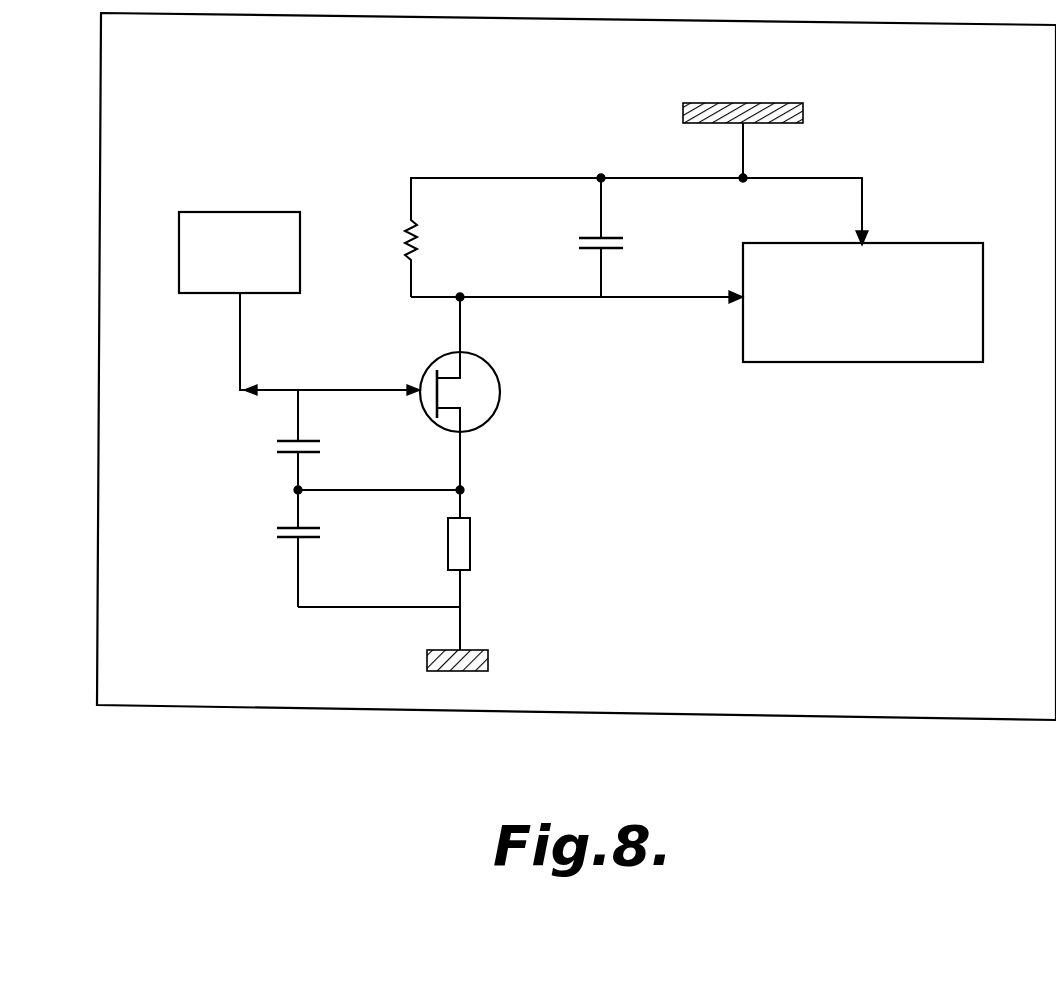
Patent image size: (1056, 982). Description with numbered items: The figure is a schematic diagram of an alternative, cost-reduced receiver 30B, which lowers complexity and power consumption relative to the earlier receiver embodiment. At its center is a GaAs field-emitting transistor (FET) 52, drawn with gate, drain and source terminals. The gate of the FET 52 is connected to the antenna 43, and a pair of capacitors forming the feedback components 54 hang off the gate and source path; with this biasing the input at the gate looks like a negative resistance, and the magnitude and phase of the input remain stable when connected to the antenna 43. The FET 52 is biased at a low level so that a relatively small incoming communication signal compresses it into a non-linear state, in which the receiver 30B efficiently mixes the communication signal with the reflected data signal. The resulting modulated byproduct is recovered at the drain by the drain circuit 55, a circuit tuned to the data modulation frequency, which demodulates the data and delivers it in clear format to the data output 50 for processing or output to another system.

The receiver 30B is at (983, 67).
The antenna 43 is at (263, 212).
The data output 50 is at (846, 334).
The GaAs field-emitting transistor (FET) 52 is at (496, 428).
The feedback components 54 is at (268, 453).
The drain circuit 55 is at (605, 307).